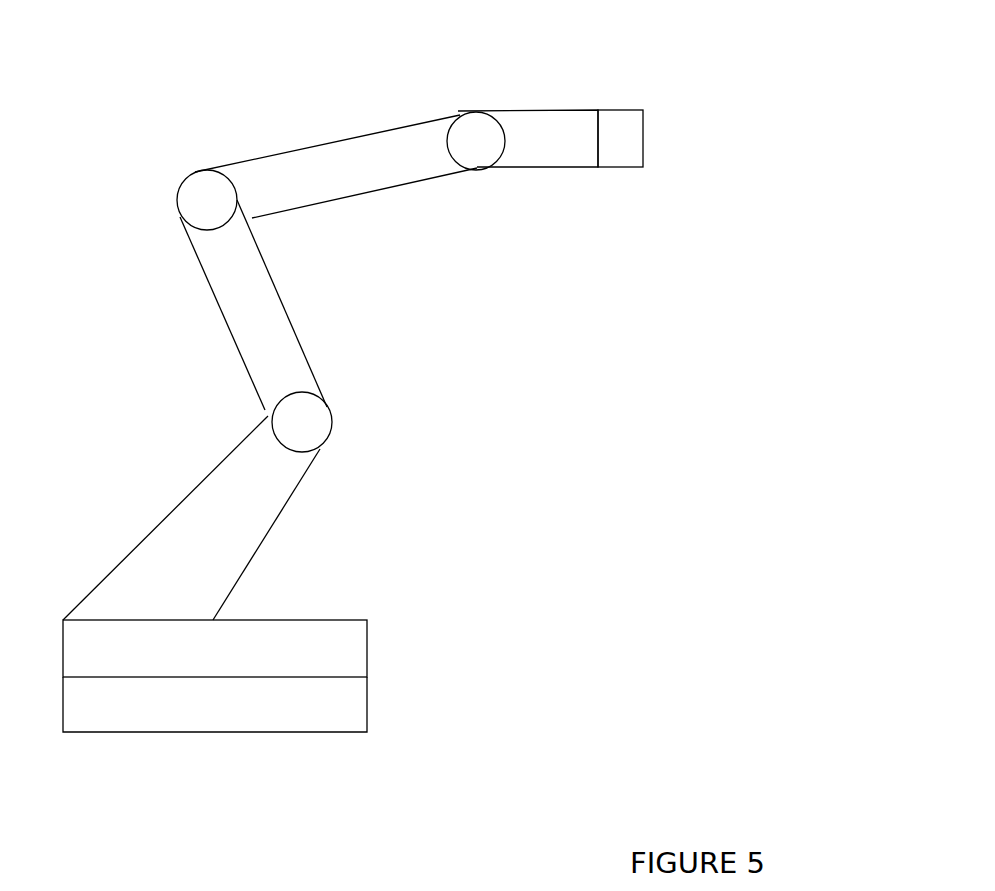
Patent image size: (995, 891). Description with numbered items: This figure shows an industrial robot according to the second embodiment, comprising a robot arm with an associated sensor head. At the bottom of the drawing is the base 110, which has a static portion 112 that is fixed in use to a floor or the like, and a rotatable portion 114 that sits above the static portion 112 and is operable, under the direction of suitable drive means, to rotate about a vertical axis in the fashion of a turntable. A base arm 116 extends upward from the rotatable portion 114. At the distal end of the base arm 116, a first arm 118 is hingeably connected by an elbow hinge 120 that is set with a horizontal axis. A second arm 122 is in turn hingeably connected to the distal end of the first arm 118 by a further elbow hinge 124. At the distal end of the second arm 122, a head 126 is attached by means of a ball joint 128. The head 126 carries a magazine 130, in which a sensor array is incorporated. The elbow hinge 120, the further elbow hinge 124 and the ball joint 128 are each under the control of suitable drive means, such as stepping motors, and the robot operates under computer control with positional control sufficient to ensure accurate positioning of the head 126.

The base 110 is at (317, 701).
The static portion 112 is at (367, 700).
The rotatable portion 114 is at (367, 643).
The base arm 116 is at (180, 543).
The first arm 118 is at (252, 333).
The elbow hinge 120 is at (290, 418).
The second arm 122 is at (367, 165).
The further elbow hinge 124 is at (207, 194).
The head 126 is at (568, 152).
The ball joint 128 is at (476, 124).
The magazine 130 is at (622, 155).